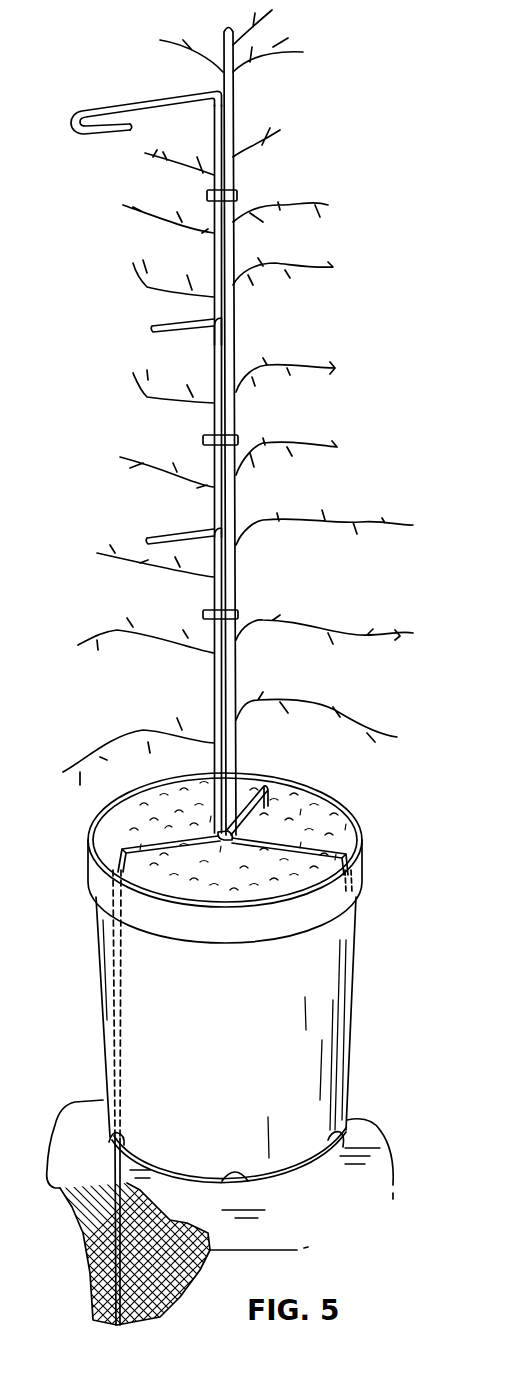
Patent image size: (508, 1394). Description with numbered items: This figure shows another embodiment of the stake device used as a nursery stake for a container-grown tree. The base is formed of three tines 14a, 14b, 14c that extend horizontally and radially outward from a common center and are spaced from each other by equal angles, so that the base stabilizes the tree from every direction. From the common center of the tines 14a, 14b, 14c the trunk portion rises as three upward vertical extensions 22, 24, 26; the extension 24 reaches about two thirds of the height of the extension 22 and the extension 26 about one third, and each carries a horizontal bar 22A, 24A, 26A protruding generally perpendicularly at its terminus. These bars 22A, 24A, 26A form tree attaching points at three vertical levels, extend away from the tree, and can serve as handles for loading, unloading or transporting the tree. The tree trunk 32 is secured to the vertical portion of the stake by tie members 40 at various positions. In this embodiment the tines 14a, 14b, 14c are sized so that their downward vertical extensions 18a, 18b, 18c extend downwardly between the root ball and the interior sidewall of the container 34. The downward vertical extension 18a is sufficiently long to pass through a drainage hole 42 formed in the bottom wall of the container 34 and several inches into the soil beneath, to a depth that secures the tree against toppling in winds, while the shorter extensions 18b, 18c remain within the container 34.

The tine 14a is at (115, 826).
The tine 14b is at (256, 795).
The tine 14c is at (333, 848).
The downward vertical extension 18a is at (112, 993).
The downward vertical extension 18b is at (267, 803).
The downward vertical extension 18c is at (355, 878).
The upward vertical extension 22 is at (140, 205).
The horizontal bar 22A is at (212, 129).
The upward vertical extension 24 is at (179, 417).
The horizontal bar 24A is at (153, 325).
The upward vertical extension 26 is at (148, 669).
The horizontal bar 26A is at (156, 537).
The tree trunk 32 is at (237, 494).
The container 34 is at (248, 1081).
The tie member 40 is at (238, 432).
The drainage hole 42 is at (338, 1142).